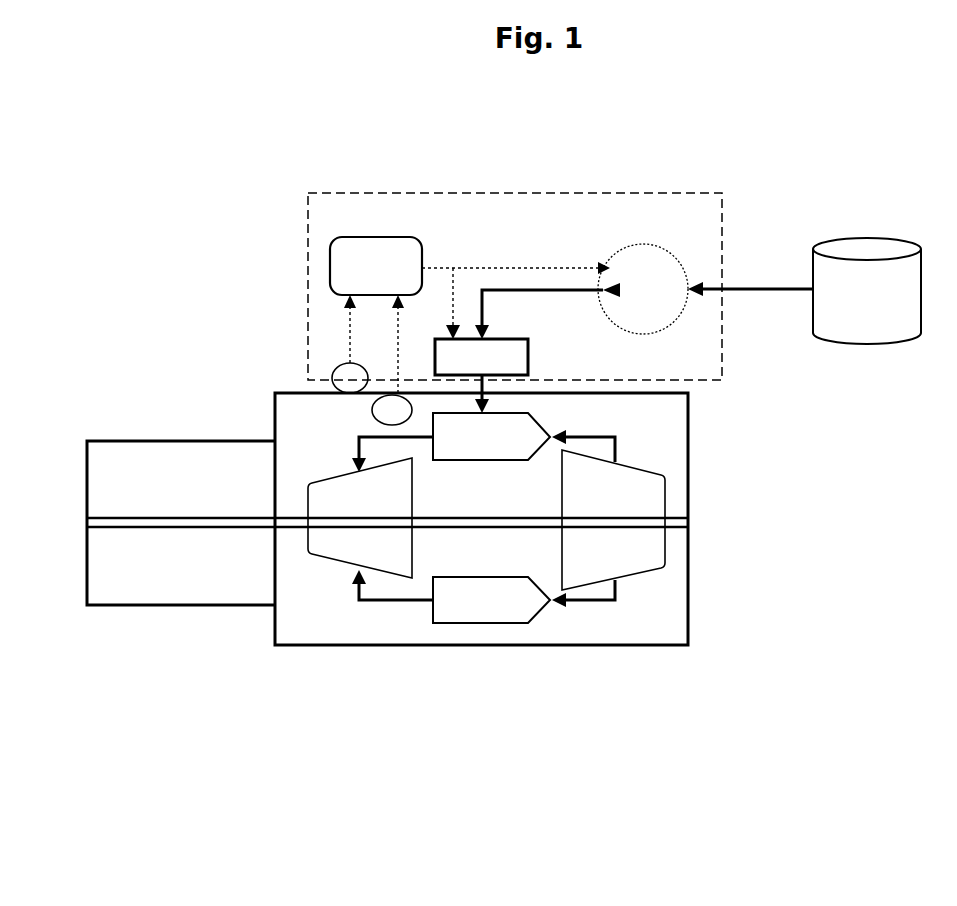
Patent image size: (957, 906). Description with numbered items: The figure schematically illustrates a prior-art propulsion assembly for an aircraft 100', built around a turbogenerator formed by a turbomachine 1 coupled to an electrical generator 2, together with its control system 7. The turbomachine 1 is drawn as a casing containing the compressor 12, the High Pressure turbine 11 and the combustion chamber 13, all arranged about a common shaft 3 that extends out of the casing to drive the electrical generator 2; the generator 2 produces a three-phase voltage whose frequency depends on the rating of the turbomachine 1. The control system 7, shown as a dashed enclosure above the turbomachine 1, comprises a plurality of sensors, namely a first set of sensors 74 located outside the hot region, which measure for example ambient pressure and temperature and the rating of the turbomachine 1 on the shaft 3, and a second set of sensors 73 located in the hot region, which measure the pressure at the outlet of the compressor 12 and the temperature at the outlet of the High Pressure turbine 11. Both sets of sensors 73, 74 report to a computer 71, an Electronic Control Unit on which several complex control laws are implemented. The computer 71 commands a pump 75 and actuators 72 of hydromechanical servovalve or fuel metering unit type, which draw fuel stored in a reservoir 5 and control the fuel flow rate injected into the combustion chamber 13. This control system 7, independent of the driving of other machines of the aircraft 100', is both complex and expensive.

The aircraft 100' is at (329, 756).
The turbomachine 1 is at (635, 645).
The electrical generator 2 is at (100, 440).
The shaft 3 is at (231, 525).
The reservoir 5 is at (870, 245).
The control system 7 is at (350, 193).
The High Pressure turbine 11 is at (360, 518).
The compressor 12 is at (613, 520).
The combustion chamber 13 is at (483, 518).
The computer 71 is at (376, 315).
The actuators 72 is at (521, 337).
The second set of sensors 73 is at (392, 410).
The first set of sensors 74 is at (350, 378).
The pump 75 is at (705, 289).